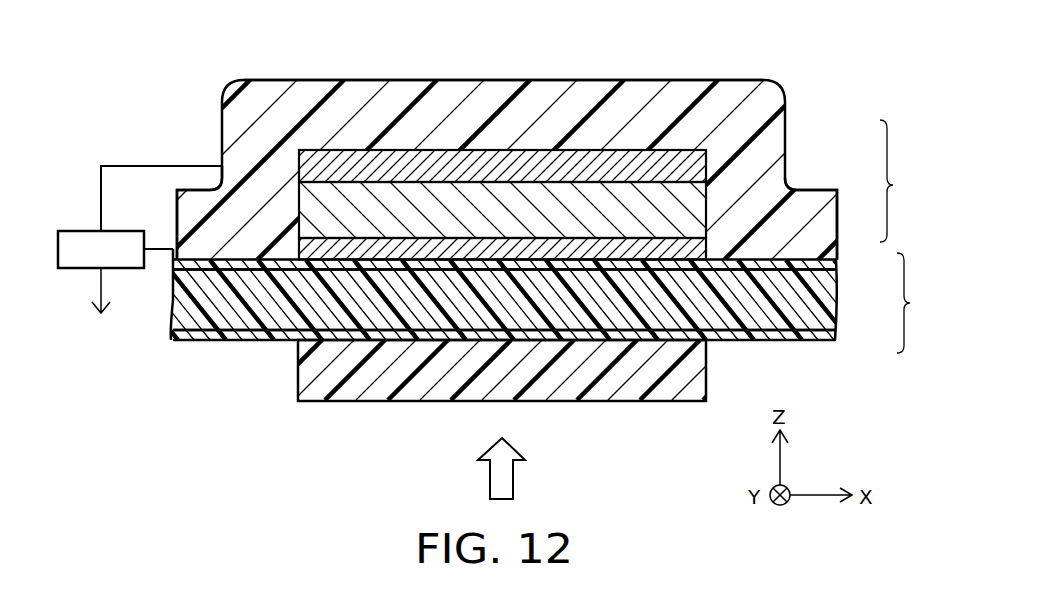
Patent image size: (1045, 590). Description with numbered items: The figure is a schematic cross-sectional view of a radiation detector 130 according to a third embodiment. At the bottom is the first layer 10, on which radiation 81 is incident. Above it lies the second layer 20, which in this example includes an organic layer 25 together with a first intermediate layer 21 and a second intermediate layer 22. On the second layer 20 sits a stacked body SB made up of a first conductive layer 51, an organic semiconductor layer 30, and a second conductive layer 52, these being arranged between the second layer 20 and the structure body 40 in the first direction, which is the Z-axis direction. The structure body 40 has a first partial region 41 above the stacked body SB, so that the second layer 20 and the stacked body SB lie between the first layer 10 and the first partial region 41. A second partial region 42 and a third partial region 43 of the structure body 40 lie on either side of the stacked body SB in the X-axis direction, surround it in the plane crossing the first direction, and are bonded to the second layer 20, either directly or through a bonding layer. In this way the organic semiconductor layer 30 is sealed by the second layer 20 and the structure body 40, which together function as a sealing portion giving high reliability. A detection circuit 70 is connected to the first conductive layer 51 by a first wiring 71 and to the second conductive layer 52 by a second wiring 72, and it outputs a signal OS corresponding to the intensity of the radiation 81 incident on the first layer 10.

The radiation detector 130 is at (819, 62).
The structure body 40 is at (773, 112).
The first partial region 41 is at (513, 100).
The second partial region 42 is at (240, 222).
The organic semiconductor layer 30 is at (800, 210).
The first conductive layer 51 is at (703, 168).
The third partial region 43 is at (703, 222).
The second conductive layer 52 is at (695, 252).
The stacked body SB is at (903, 181).
The second layer 20 is at (529, 301).
The first intermediate layer 21 is at (822, 265).
The organic layer 25 is at (823, 302).
The second intermediate layer 22 is at (822, 333).
The first layer 10 is at (695, 372).
The detection circuit 70 is at (82, 231).
The first wiring 71 is at (100, 183).
The second wiring 72 is at (158, 254).
The signal OS is at (98, 293).
The radiation 81 is at (490, 478).